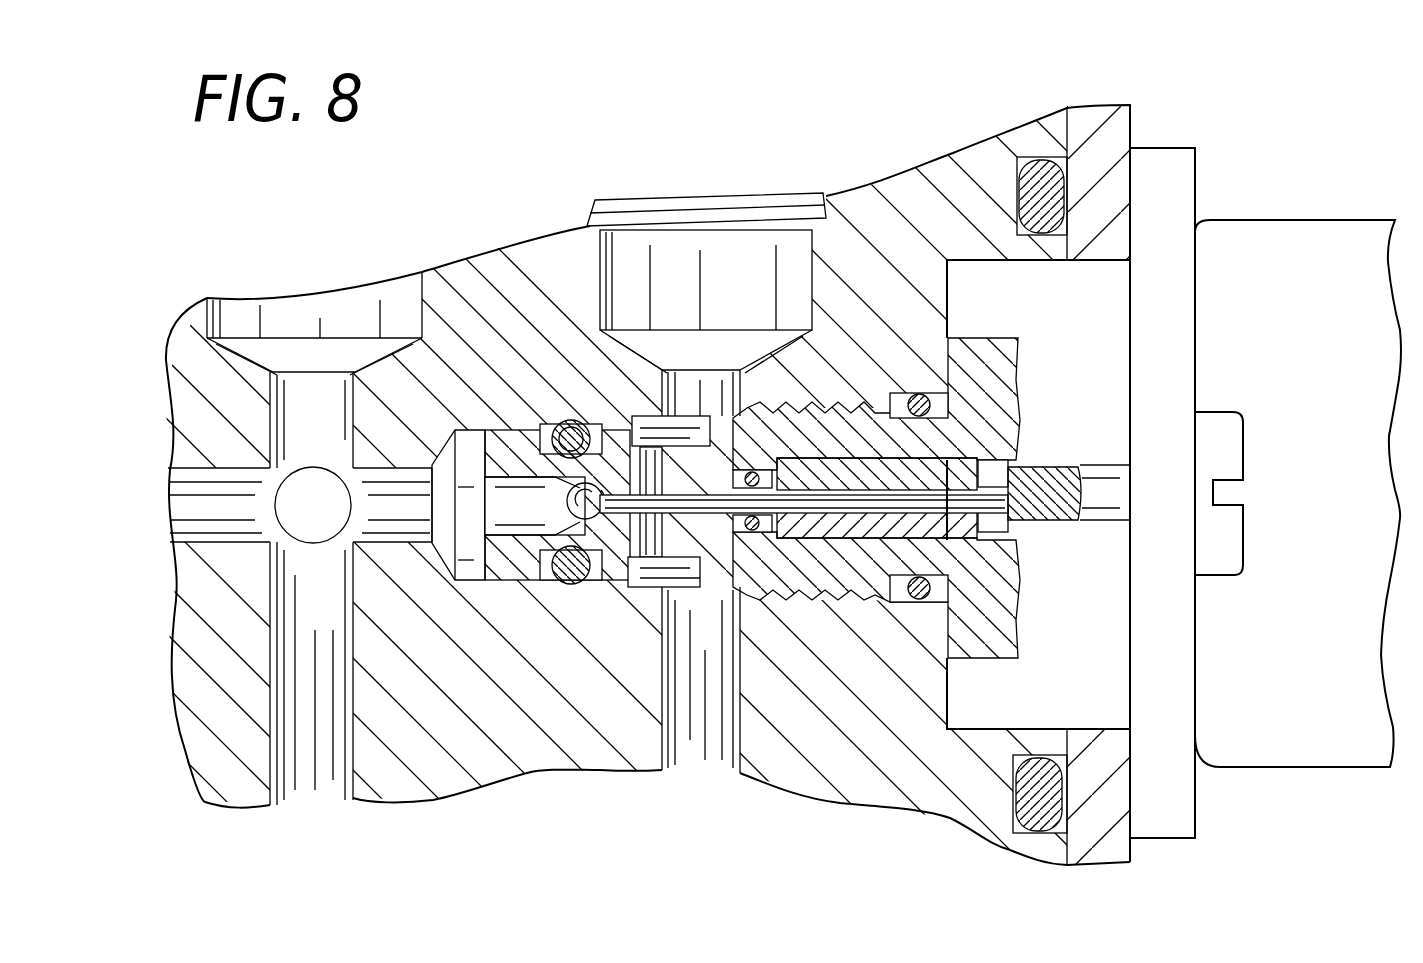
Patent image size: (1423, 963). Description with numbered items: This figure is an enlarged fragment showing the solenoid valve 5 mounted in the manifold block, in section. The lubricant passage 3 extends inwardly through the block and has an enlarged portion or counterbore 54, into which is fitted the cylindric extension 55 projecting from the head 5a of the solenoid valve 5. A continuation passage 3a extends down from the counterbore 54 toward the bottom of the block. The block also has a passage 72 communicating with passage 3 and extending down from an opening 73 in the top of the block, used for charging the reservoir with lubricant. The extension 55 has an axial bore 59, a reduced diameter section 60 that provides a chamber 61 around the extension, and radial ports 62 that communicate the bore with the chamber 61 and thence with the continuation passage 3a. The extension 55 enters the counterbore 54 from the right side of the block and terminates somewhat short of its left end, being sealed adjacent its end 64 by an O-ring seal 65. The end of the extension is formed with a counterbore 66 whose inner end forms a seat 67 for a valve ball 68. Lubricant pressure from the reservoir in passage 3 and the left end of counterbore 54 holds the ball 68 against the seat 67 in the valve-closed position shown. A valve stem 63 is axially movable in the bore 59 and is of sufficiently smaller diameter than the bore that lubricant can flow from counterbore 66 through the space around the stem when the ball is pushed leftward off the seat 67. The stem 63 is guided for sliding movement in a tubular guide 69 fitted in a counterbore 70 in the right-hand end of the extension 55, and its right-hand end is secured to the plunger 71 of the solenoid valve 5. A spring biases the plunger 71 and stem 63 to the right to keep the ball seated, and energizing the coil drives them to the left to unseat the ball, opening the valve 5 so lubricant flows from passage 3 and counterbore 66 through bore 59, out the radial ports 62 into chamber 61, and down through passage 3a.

The passage 3 is at (210, 527).
The continuation passage 3a is at (302, 770).
The solenoid valve 5 is at (1302, 206).
The head 5a is at (975, 730).
The counterbore 54 is at (422, 270).
The cylindric extension 55 is at (540, 580).
The axial bore 59 is at (700, 593).
The reduced diameter section 60 is at (713, 417).
The chamber 61 is at (653, 417).
The radial ports 62 is at (637, 582).
The valve stem 63 is at (982, 538).
The end of the extension 64 is at (440, 560).
The O-ring seal 65 is at (563, 560).
The counterbore 66 is at (517, 497).
The seat 67 is at (613, 425).
The valve ball 68 is at (490, 600).
The tubular guide 69 is at (880, 527).
The counterbore 70 is at (857, 402).
The plunger 71 is at (1063, 465).
The passage 72 is at (275, 406).
The opening 73 is at (212, 317).